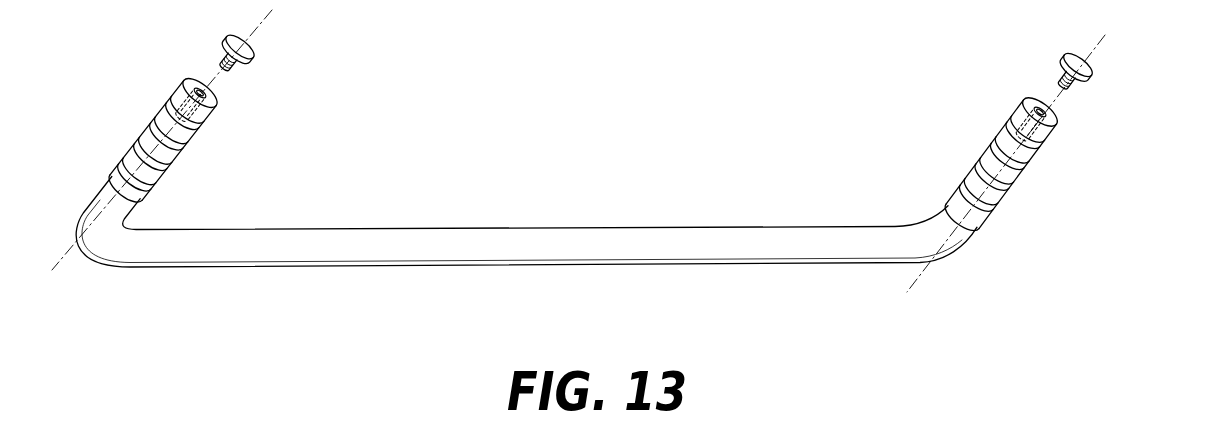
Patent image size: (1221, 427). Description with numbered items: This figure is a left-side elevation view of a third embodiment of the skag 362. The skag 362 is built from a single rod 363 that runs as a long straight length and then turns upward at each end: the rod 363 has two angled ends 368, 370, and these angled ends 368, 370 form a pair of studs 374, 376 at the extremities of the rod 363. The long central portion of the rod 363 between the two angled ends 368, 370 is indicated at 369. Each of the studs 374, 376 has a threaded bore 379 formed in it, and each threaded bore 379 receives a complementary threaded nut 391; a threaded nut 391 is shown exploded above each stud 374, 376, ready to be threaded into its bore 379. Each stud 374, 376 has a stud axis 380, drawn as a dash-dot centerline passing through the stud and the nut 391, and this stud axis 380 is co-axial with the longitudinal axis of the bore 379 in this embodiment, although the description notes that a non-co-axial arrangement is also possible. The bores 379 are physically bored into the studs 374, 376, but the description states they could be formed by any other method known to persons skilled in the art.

The skag 362 is at (526, 191).
The rod 363 is at (715, 249).
The angled end 368 is at (163, 131).
The cross member 369 is at (430, 226).
The angled end 370 is at (1012, 149).
The stud 374 is at (184, 170).
The stud 376 is at (1024, 185).
The threaded bore 379 is at (200, 133).
The stud axis 380 is at (62, 262).
The threaded nut 391 is at (276, 61).